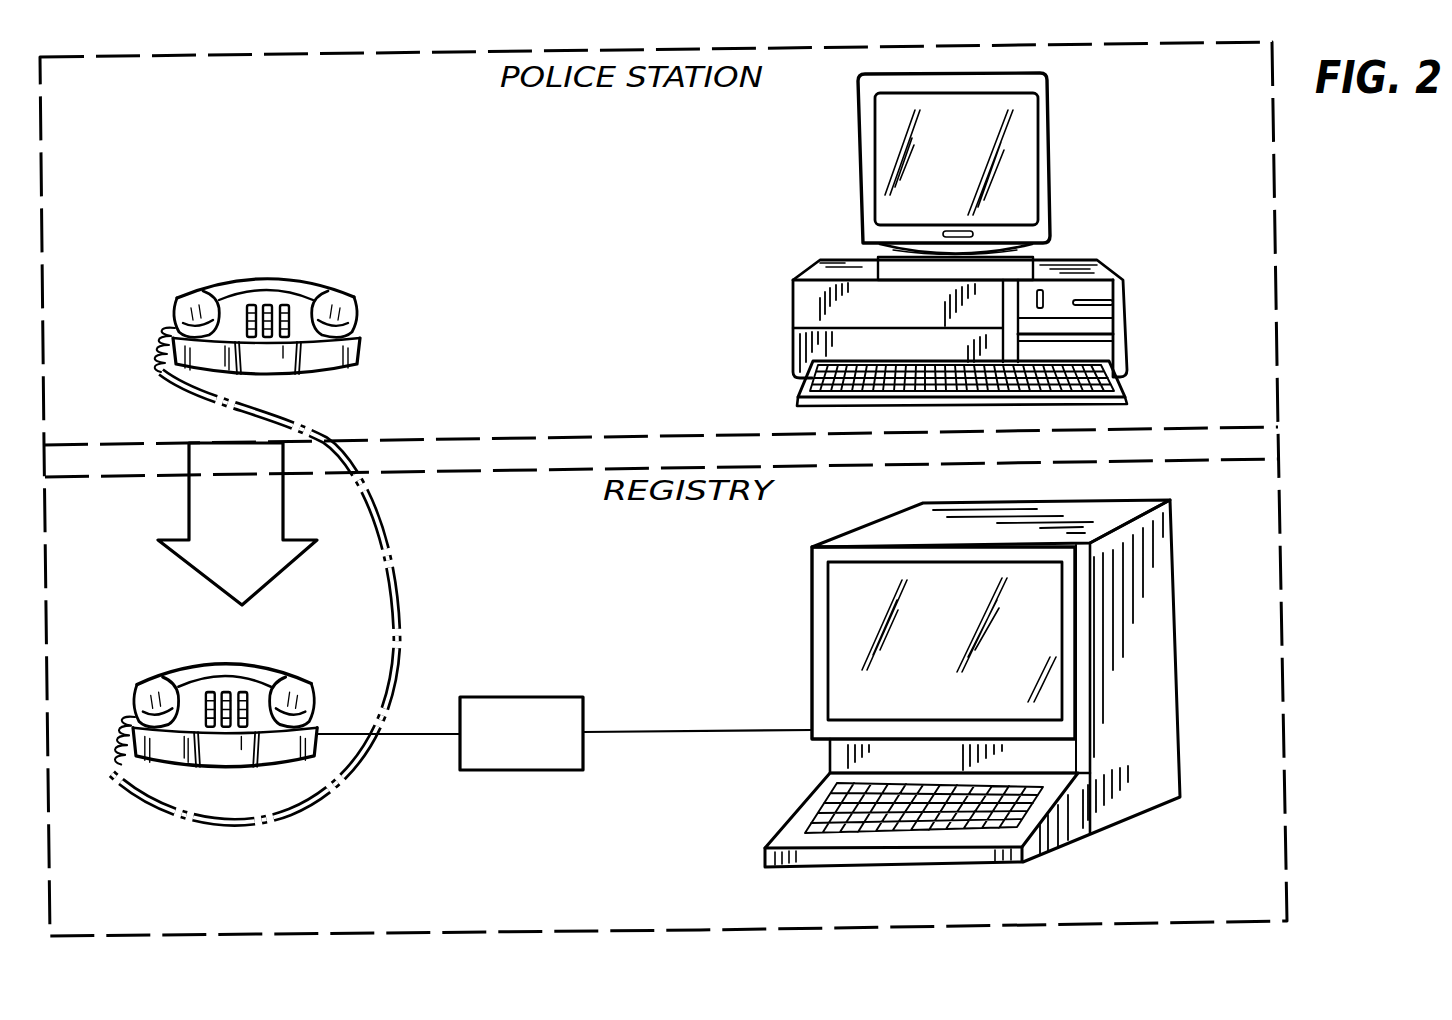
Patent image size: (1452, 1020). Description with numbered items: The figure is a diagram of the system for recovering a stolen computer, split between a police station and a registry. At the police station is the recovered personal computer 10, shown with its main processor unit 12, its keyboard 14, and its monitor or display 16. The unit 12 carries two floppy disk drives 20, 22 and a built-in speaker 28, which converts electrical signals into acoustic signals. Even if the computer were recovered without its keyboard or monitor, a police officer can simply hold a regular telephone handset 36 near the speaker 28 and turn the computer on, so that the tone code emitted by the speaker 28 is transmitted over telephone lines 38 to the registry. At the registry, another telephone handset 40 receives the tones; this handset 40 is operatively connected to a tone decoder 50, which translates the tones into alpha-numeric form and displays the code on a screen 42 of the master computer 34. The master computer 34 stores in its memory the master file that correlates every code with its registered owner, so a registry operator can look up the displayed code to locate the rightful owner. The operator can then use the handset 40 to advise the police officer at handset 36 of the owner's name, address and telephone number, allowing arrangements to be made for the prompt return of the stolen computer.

The personal computer 10 is at (1094, 119).
The main processor unit 12 is at (950, 316).
The keyboard 14 is at (1097, 373).
The monitor or display 16 is at (892, 127).
The floppy disk drive 20 is at (1093, 292).
The floppy disk drive 22 is at (1093, 323).
The speaker 28 is at (800, 342).
The master computer 34 is at (985, 683).
The telephone handset 36 is at (355, 307).
The telephone lines 38 is at (384, 536).
The telephone handset 40 is at (273, 673).
The screen 42 is at (852, 617).
The tone decoder 50 is at (543, 760).